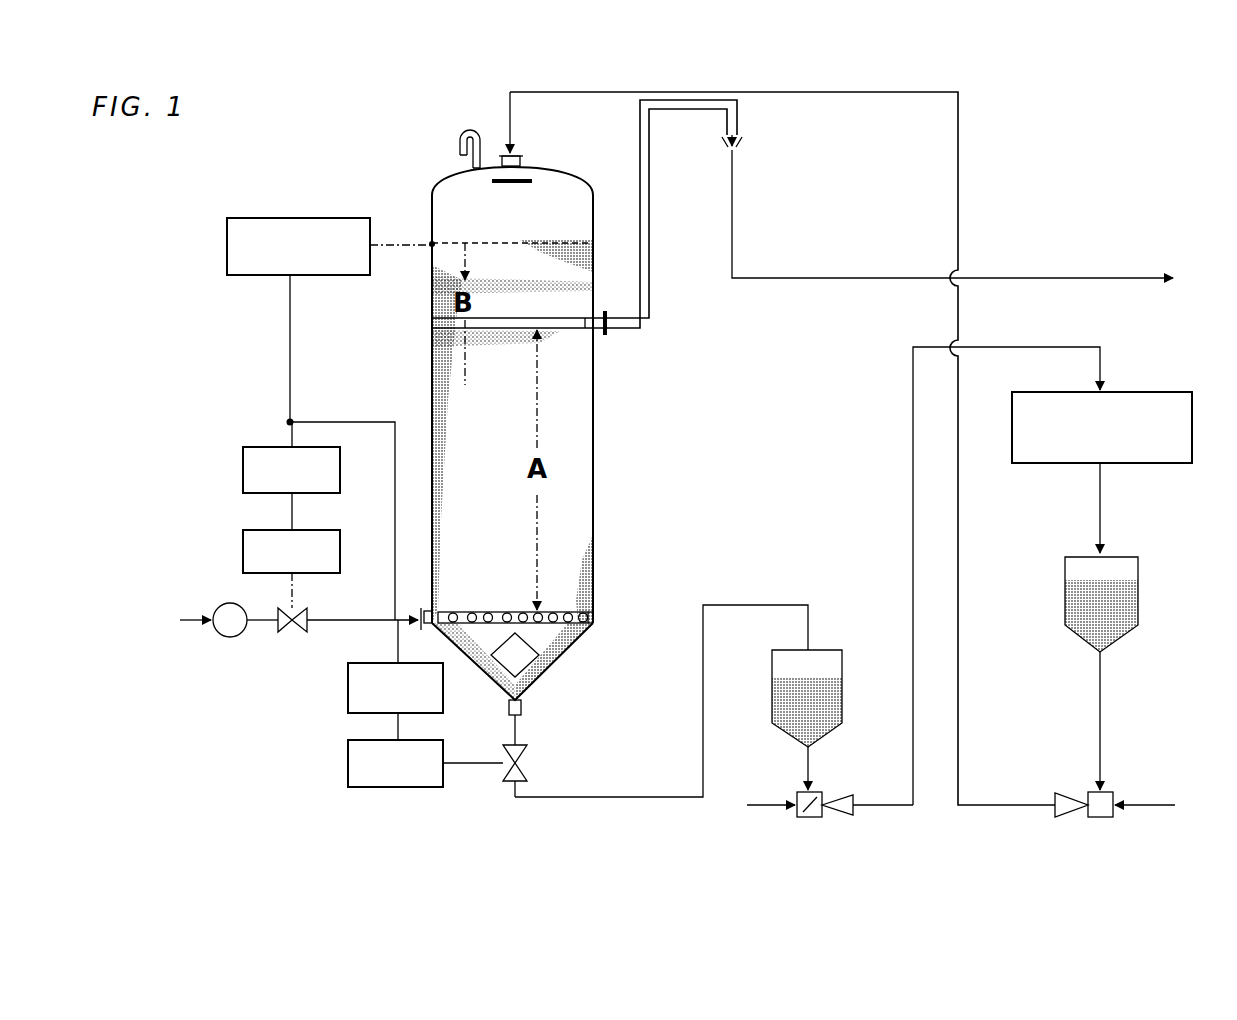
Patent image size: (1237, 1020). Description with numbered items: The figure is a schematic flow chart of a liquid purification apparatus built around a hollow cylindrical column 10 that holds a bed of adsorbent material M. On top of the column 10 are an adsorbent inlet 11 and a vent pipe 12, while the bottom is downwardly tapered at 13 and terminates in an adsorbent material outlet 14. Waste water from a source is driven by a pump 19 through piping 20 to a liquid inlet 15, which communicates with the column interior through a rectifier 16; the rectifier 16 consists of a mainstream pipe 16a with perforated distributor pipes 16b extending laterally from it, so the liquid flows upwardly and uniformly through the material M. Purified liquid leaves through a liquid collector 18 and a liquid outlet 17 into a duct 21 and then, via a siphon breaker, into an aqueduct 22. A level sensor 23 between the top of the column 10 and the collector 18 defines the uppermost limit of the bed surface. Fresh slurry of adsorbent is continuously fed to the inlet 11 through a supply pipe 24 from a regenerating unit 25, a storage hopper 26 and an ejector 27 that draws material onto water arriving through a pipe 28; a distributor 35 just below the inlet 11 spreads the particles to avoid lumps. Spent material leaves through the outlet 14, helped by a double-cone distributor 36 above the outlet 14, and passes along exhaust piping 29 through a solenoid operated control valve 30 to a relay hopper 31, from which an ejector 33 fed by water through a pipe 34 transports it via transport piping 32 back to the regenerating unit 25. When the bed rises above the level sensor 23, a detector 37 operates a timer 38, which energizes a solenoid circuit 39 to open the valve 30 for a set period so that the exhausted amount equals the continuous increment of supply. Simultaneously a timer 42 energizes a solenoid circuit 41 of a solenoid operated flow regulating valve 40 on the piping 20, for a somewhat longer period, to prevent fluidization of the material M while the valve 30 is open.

The hollow cylindrical column 10 is at (593, 415).
The adsorbent inlet 11 is at (520, 155).
The vent pipe 12 is at (472, 133).
The downwardly tapered portion 13 is at (578, 640).
The adsorbent material outlet 14 is at (522, 707).
The liquid inlet 15 is at (420, 612).
The rectifier 16 is at (460, 608).
The mainstream pipe 16a is at (588, 630).
The perforated distributor pipes 16b is at (590, 612).
The liquid outlet 17 is at (607, 333).
The liquid collector 18 is at (575, 318).
The pump 19 is at (222, 637).
The piping 20 is at (340, 622).
The duct 21 is at (649, 200).
The aqueduct 22 is at (812, 282).
The level sensor 23 is at (432, 243).
The supply pipe 24 is at (958, 188).
The regenerating unit 25 is at (1175, 392).
The storage hopper 26 is at (1140, 563).
The ejector 27 is at (1105, 800).
The pipe 28 is at (1160, 808).
The exhaust piping 29 is at (613, 797).
The solenoid operated control valve 30 is at (527, 755).
The relay hopper 31 is at (843, 680).
The transport piping 32 is at (913, 490).
The ejector 33 is at (810, 814).
The pipe 34 is at (755, 808).
The distributor 35 is at (510, 183).
The distributor 36 is at (525, 665).
The detector 37 is at (296, 218).
The timer 38 is at (348, 700).
The solenoid circuit 39 is at (348, 768).
The solenoid operated flow regulating valve 40 is at (283, 632).
The solenoid circuit 41 is at (243, 560).
The timer 42 is at (243, 470).
The adsorbent material M is at (593, 580).